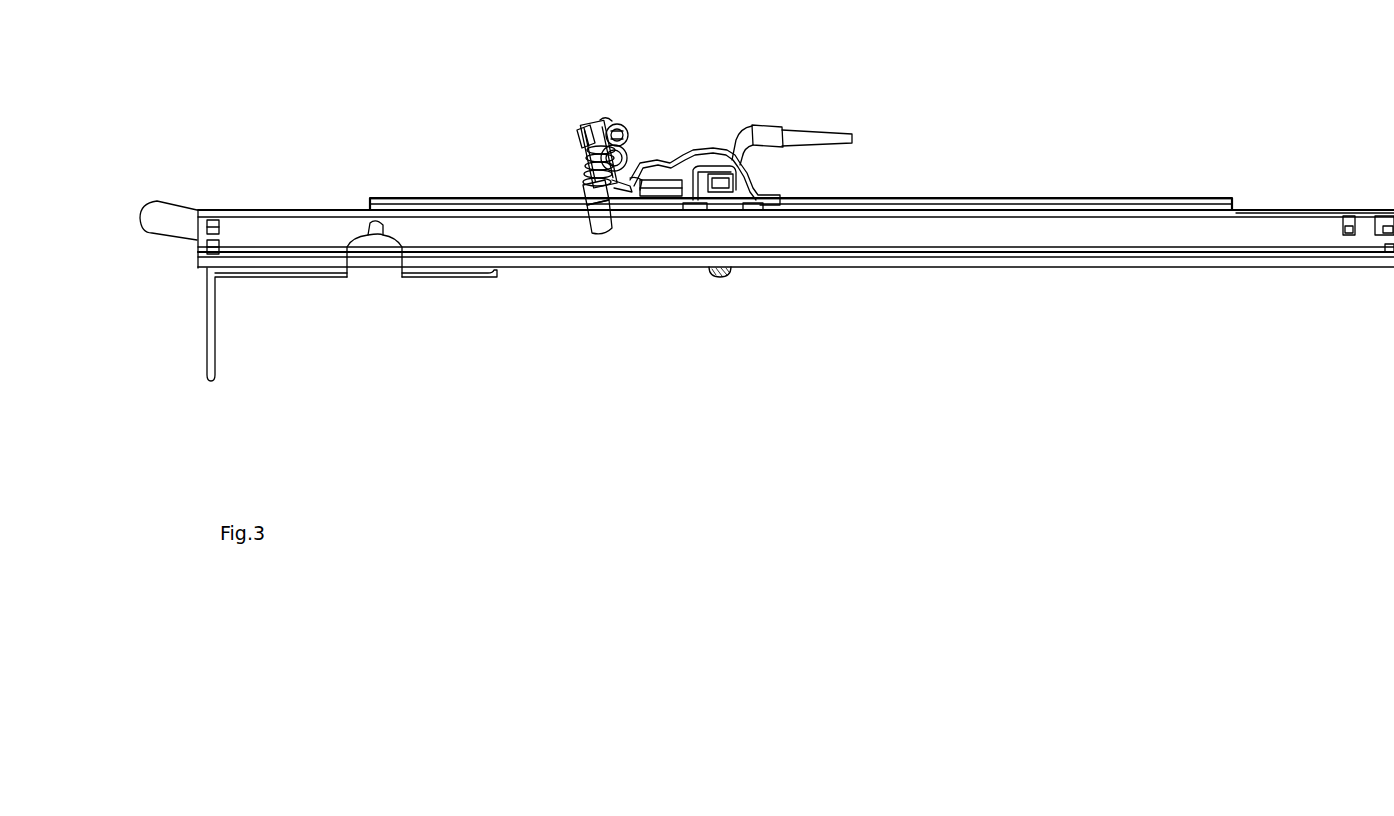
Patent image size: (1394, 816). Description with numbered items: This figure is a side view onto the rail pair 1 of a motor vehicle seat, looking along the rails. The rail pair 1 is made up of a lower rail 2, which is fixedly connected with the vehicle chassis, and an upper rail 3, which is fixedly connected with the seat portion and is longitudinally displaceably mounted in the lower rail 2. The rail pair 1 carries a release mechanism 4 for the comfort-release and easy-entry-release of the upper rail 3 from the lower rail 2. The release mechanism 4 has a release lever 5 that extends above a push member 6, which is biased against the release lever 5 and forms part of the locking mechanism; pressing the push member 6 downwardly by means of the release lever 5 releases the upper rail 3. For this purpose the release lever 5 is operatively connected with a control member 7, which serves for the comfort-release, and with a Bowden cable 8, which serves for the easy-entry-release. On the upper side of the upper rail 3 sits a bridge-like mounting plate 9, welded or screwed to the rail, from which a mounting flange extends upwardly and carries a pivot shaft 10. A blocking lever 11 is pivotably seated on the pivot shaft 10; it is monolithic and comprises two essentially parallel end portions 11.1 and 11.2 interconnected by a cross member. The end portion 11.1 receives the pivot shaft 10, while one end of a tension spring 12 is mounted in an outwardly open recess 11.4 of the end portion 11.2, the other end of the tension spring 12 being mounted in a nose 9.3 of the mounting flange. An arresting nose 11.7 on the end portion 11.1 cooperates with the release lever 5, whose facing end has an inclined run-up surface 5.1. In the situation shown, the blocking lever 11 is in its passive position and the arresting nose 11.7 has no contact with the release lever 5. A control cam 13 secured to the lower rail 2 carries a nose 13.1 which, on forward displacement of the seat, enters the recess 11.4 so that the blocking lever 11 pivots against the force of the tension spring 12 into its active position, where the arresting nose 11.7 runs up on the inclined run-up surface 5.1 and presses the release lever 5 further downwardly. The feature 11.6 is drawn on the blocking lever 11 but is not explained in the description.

The rail pair 1 is at (1012, 122).
The lower rail 2 is at (1296, 222).
The upper rail 3 is at (1103, 205).
The release mechanism 4 is at (651, 84).
The release lever 5 is at (697, 177).
The inclined run-up surface 5.1 is at (633, 180).
The push member 6 is at (722, 180).
The control member 7 is at (178, 218).
The Bowden cable 8 is at (806, 135).
The mounting plate 9 is at (702, 150).
The nose 9.3 is at (622, 128).
The pivot shaft 10 is at (628, 153).
The blocking lever 11 is at (588, 158).
The end portion 11.1 is at (606, 128).
The end portion 11.2 is at (580, 197).
The recess 11.4 is at (588, 212).
The clip lug 11.6 is at (583, 130).
The arresting nose 11.7 is at (618, 185).
The tension spring 12 is at (576, 177).
The control cam 13 is at (377, 263).
The nose 13.1 is at (376, 233).